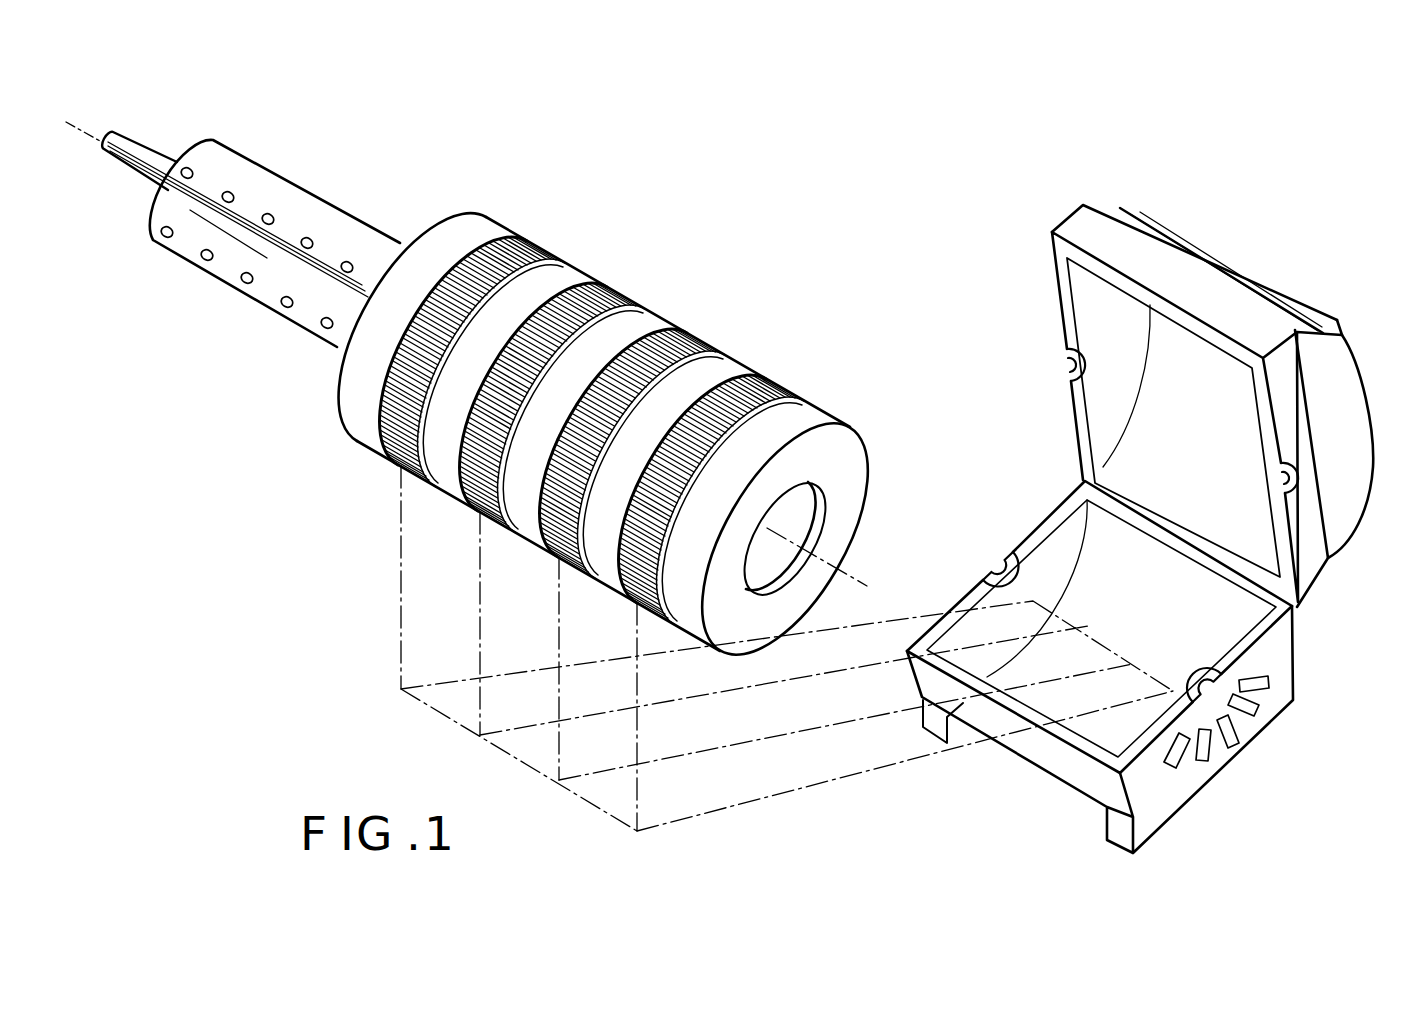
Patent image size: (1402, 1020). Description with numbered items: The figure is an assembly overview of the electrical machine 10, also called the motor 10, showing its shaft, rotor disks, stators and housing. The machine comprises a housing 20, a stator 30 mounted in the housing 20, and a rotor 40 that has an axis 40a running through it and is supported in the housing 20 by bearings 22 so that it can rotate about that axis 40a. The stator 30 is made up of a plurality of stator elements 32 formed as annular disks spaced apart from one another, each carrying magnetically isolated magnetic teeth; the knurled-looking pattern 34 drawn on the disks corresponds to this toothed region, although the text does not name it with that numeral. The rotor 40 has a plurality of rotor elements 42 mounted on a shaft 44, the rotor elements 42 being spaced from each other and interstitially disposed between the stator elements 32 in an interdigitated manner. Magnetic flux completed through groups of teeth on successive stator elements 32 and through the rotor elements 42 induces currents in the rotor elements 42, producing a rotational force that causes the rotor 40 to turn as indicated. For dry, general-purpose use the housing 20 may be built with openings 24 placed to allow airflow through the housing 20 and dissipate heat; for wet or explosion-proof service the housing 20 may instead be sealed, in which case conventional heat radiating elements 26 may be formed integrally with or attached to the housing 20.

The electrical machine 10 is at (998, 254).
The housing 20 is at (1112, 667).
The bearings 22 is at (998, 562).
The openings 24 is at (1253, 715).
The heat radiating elements 26 is at (1258, 271).
The stator 30 is at (563, 171).
The stator elements 32 is at (554, 411).
The knurl pattern 34 is at (493, 372).
The rotor 40 is at (233, 428).
The axis 40a is at (80, 126).
The rotor elements 42 is at (670, 576).
The shaft 44 is at (148, 186).